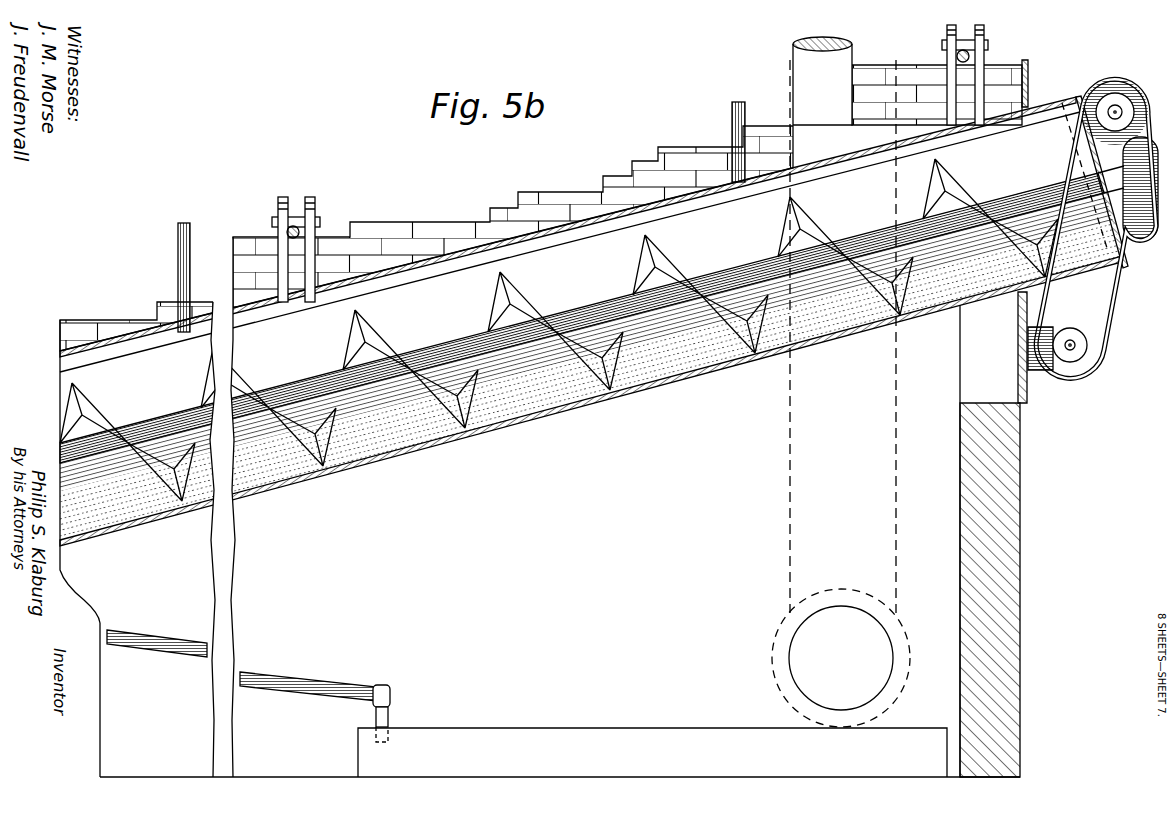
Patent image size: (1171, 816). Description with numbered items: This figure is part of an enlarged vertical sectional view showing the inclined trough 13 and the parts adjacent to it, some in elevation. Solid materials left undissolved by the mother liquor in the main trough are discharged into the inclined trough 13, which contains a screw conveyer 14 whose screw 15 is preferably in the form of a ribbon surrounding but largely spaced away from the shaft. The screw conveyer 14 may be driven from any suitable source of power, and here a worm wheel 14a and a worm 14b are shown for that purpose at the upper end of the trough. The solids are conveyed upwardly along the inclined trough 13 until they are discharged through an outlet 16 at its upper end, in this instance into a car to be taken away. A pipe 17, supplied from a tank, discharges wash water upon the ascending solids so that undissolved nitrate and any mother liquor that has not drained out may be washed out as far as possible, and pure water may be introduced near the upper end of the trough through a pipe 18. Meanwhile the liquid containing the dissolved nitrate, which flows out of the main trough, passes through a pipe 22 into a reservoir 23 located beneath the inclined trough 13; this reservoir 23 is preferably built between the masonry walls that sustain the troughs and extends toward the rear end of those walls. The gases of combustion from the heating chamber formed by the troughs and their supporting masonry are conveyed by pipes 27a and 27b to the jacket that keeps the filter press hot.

The inclined trough 13 is at (723, 368).
The screw conveyer 14 is at (439, 352).
The worm wheel 14a is at (1146, 242).
The worm 14b is at (1109, 98).
The screw 15 is at (378, 345).
The outlet 16 is at (1108, 262).
The pipe 17 is at (188, 240).
The pipe 18 is at (732, 117).
The pipe 22 is at (140, 636).
The reservoir 23 is at (606, 745).
The pipe 27a is at (800, 664).
The pipe 27b is at (805, 78).